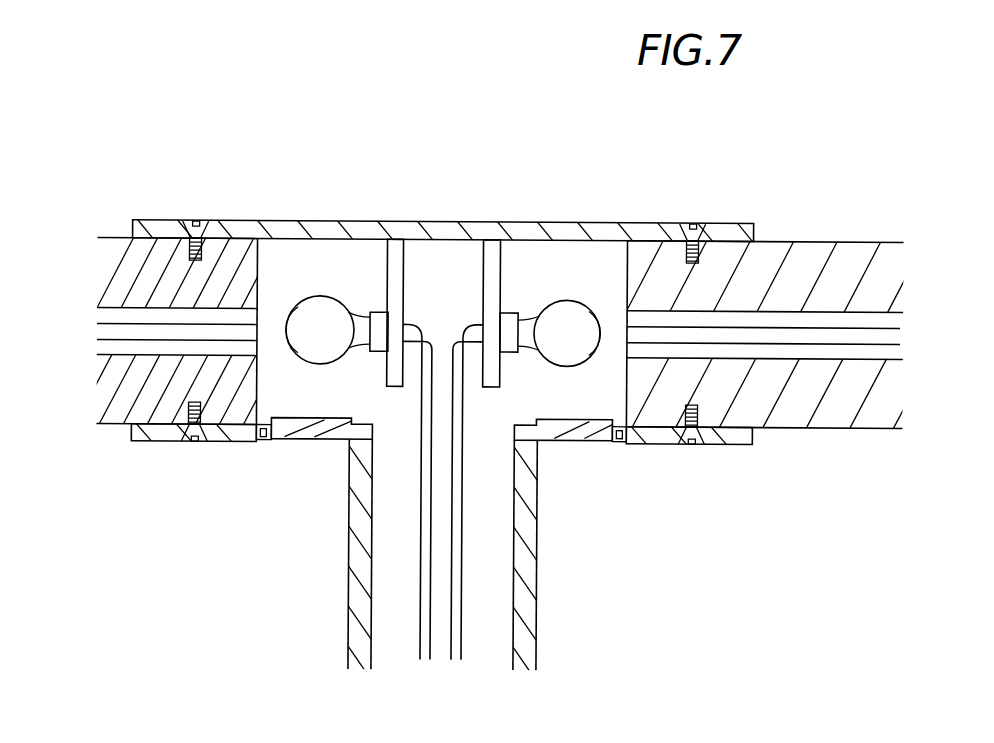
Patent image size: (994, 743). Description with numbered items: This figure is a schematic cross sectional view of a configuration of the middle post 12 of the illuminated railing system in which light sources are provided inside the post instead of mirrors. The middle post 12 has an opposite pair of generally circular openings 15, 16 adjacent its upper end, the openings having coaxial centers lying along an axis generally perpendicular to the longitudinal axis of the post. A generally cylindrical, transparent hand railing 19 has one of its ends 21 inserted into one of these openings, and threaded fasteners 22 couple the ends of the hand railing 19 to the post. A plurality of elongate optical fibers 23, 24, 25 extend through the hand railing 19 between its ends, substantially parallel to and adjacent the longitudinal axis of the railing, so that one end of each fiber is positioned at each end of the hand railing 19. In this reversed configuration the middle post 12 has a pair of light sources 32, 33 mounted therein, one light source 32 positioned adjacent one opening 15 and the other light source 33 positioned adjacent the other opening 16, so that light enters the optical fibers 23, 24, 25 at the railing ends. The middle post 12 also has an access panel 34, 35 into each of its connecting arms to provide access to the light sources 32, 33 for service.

The middle post 12 is at (350, 567).
The opening 15 is at (132, 236).
The opening 16 is at (753, 240).
The hand railing 19 is at (838, 240).
The end of hand railing 21 is at (228, 420).
The threaded fastener 22 is at (202, 227).
The optical fiber 23 is at (105, 318).
The optical fiber 24 is at (102, 328).
The optical fiber 25 is at (100, 348).
The light source 32 is at (313, 307).
The light source 33 is at (556, 309).
The access panel 34 is at (302, 432).
The access panel 35 is at (573, 437).